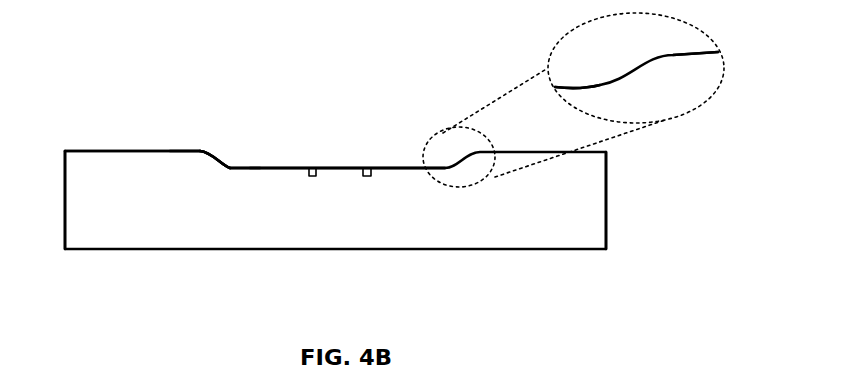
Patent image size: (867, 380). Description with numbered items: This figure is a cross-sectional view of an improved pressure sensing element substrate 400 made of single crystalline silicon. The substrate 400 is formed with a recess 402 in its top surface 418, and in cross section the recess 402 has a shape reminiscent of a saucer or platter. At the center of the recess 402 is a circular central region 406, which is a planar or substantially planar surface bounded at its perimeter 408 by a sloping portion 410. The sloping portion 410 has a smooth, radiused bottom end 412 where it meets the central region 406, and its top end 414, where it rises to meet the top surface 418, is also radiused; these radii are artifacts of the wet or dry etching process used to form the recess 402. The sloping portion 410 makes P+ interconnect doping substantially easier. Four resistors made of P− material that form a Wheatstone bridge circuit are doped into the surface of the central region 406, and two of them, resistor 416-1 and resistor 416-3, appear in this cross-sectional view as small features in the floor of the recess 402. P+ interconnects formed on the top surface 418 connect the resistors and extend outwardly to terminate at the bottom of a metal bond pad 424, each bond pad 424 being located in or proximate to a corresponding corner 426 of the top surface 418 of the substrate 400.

The pressure sensing element substrate 400 is at (570, 238).
The recess 402 is at (330, 168).
The central region 406 is at (293, 168).
The perimeter 408 is at (230, 168).
The sloping portion 410 is at (213, 160).
The bottom end 412 is at (230, 168).
The top end 414 is at (202, 151).
The resistor 416-1 is at (367, 176).
The resistor 416-3 is at (315, 176).
The top surface 418 is at (111, 151).
The bond pad 424 is at (150, 151).
The corner 426 is at (600, 224).